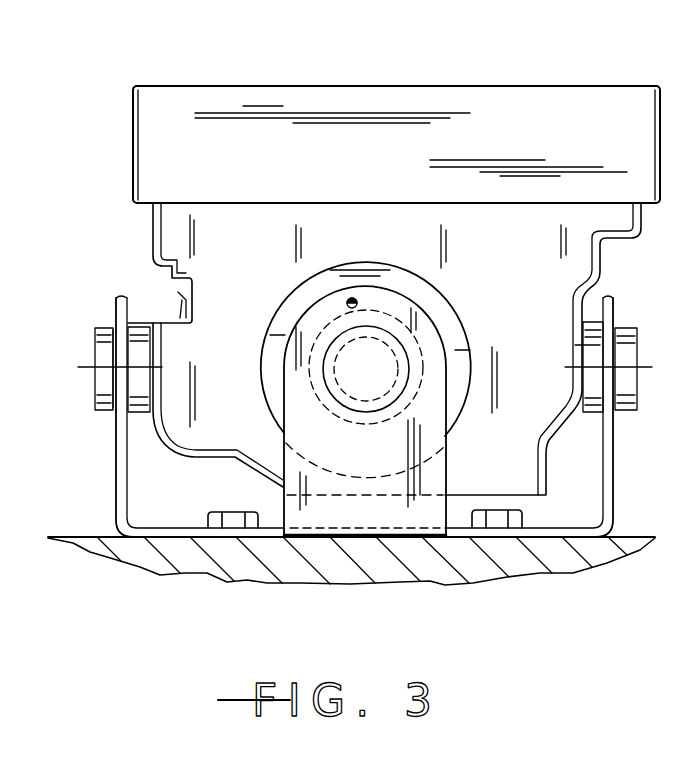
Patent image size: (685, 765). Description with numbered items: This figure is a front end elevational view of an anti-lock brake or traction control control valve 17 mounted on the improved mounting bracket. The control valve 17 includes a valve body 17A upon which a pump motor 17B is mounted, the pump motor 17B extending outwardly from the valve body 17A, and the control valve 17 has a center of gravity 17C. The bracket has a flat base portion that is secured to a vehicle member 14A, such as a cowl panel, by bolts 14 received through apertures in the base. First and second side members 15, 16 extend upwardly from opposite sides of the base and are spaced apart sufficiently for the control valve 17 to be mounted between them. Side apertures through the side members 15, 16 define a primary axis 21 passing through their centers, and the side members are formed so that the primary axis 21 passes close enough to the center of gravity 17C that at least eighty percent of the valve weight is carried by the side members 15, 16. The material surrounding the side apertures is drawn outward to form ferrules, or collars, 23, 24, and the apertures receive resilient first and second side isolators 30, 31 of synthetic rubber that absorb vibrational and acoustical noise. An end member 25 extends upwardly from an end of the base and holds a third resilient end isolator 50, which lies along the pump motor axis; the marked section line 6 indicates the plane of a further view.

The control valve 17 is at (262, 68).
The valve body 17A is at (533, 257).
The pump motor 17B is at (290, 338).
The center of gravity 17C is at (348, 301).
The end isolator 50 is at (382, 385).
The end member 25 is at (327, 455).
The section line 6- 6 is at (388, 240).
The first side member 15 is at (116, 462).
The second side member 16 is at (614, 450).
The primary axis 21 is at (90, 363).
The ferrule 23 is at (107, 326).
The first side isolator 30 is at (143, 323).
The second side isolator 31 is at (586, 336).
The ferrule 24 is at (627, 327).
The bolts 14 is at (223, 512).
The vehicle member 14A is at (510, 570).